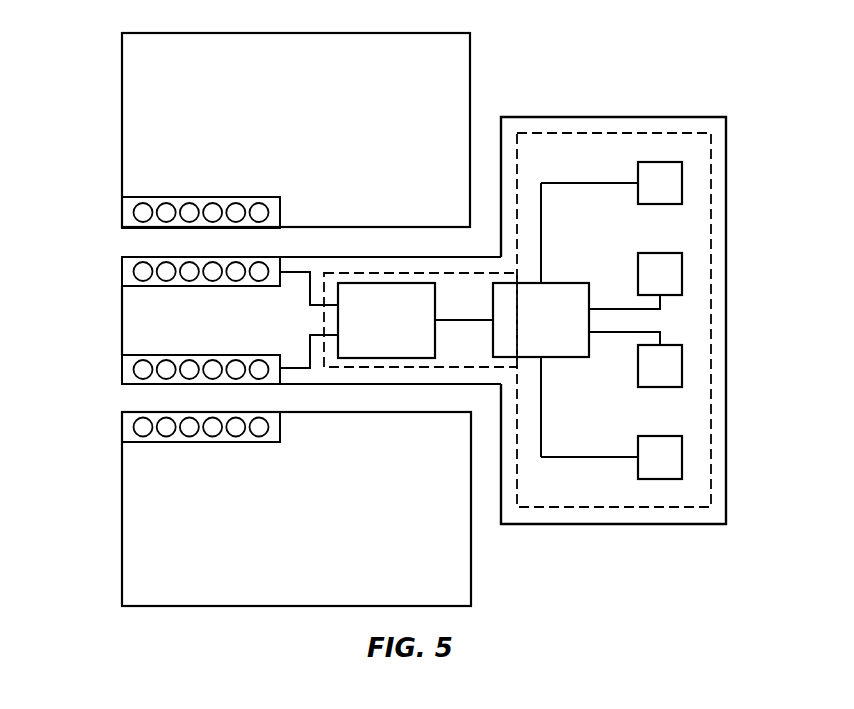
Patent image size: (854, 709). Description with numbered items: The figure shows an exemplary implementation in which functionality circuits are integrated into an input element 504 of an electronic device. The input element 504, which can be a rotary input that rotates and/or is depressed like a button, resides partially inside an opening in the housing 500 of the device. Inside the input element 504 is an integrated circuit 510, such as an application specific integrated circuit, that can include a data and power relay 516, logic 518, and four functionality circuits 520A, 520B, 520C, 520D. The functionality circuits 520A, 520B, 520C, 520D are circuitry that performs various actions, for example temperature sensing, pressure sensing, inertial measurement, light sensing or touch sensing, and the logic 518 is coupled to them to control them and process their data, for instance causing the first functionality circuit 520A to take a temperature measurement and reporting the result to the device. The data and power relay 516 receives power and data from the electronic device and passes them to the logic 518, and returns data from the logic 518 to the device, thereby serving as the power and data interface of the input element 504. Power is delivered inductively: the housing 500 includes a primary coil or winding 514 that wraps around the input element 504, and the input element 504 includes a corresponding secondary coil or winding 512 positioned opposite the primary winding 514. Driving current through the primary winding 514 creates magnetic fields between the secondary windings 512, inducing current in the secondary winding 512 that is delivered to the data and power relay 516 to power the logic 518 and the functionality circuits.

The housing 500 is at (122, 118).
The input element 504 is at (615, 117).
The integrated circuit 510 is at (700, 496).
The secondary coil or winding 512 is at (108, 266).
The primary coil or winding 514 is at (108, 208).
The data and power relay 516 is at (385, 283).
The logic 518 is at (572, 358).
The functionality circuit B-1 520A is at (682, 192).
The functionality circuit B-2 520B is at (682, 282).
The functionality circuit B-3 520C is at (682, 373).
The functionality circuit B-4 520D is at (682, 462).